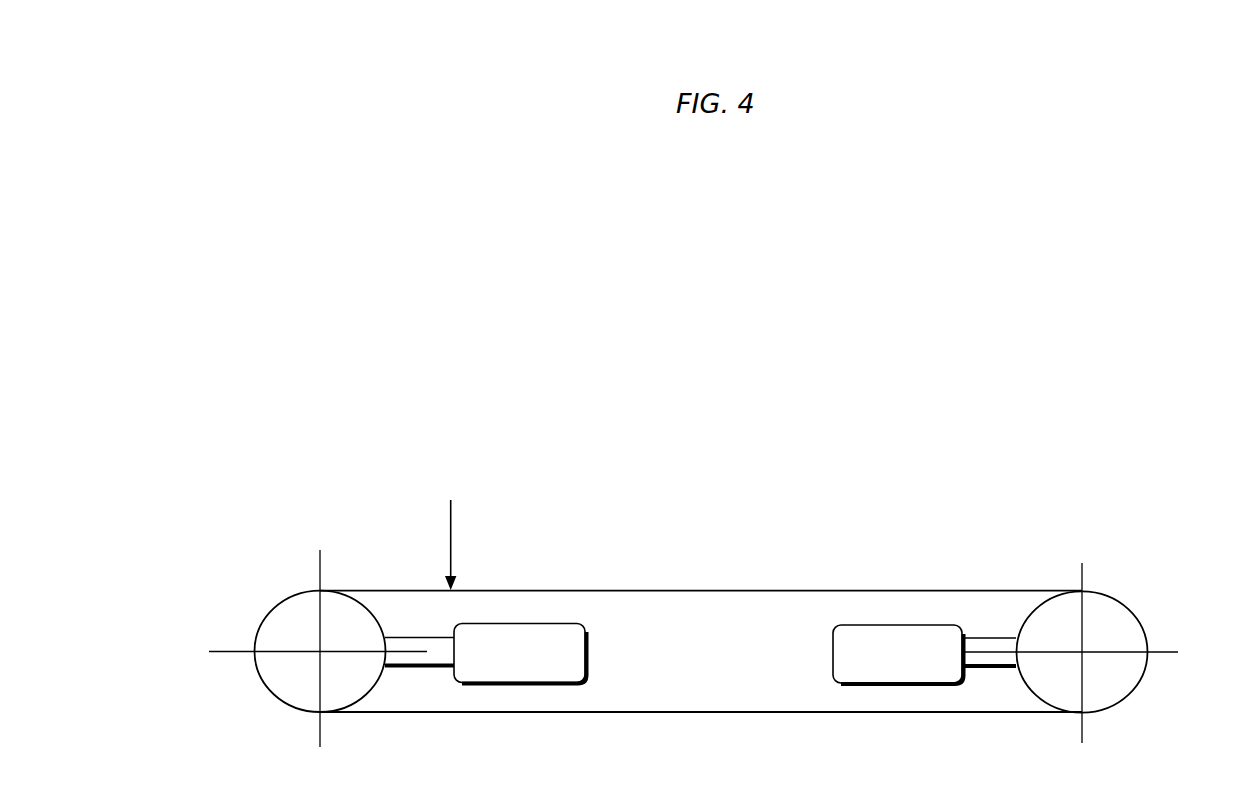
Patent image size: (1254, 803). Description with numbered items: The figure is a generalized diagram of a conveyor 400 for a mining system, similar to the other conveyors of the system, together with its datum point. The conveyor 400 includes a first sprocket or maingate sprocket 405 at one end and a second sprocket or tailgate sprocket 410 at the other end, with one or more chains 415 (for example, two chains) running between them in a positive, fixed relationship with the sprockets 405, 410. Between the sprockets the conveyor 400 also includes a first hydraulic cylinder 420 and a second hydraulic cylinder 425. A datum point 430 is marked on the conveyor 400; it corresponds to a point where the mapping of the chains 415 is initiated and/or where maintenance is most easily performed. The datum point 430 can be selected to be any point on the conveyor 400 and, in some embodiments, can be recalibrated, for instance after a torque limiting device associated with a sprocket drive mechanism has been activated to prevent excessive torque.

The conveyor 400 is at (372, 330).
The maingate sprocket 405 is at (1132, 613).
The tailgate sprocket 410 is at (277, 603).
The chains 415 is at (832, 591).
The first hydraulic cylinder 420 is at (832, 652).
The second hydraulic cylinder 425 is at (586, 653).
The datum point 430 is at (451, 542).